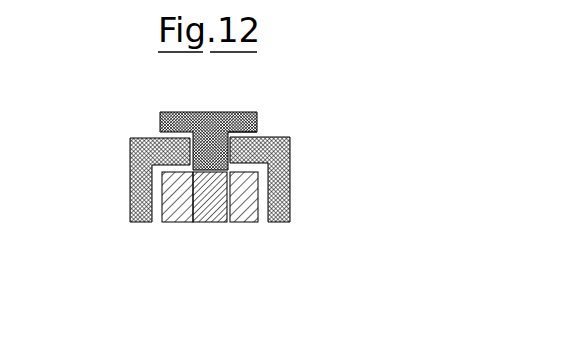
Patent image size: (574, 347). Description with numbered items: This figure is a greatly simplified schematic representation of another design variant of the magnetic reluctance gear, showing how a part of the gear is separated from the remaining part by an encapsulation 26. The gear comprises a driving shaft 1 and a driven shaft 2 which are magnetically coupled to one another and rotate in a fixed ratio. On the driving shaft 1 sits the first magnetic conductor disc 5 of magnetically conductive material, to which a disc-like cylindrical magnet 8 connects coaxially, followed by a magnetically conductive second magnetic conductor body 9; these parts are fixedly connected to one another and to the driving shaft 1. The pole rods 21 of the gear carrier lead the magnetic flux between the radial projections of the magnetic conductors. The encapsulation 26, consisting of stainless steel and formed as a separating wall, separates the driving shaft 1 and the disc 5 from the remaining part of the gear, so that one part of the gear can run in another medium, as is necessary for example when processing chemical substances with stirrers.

The driving shaft 1 is at (290, 198).
The driven shaft 2 is at (130, 182).
The first magnetic conductor disc 5 is at (252, 217).
The magnetic force generator 8 is at (212, 214).
The second magnetic conductor 9 is at (170, 214).
The pole rods 21 is at (257, 112).
The encapsulation 26 is at (257, 131).